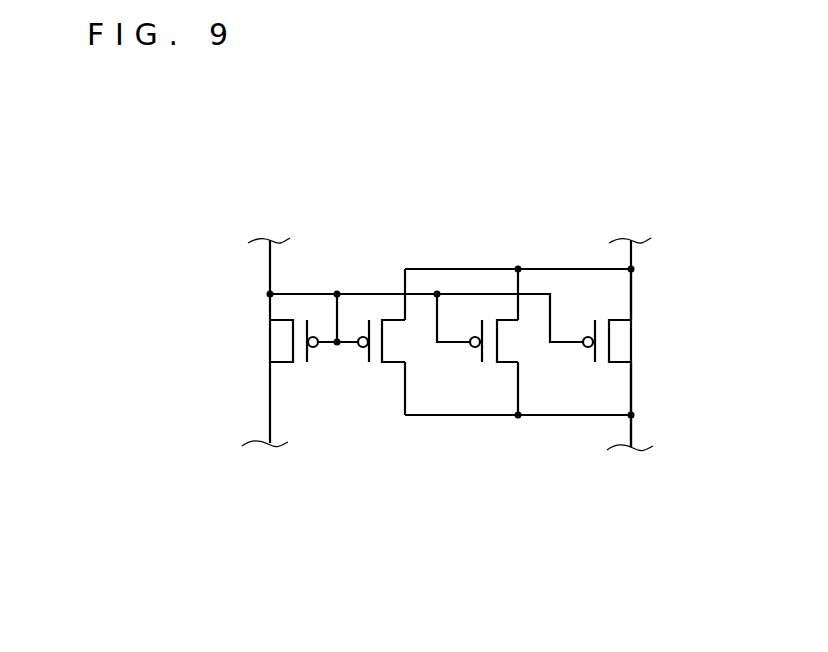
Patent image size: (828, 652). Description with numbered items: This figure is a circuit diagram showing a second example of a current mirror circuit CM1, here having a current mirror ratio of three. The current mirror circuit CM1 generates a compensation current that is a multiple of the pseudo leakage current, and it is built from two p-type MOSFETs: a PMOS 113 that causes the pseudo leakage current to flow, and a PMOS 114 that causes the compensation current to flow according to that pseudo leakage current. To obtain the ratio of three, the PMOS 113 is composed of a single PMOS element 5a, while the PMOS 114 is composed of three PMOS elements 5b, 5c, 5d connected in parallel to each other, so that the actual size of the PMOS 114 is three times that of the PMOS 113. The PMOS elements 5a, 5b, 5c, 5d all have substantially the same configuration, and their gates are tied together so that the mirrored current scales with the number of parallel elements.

The current mirror circuit CM1 is at (230, 210).
The PMOS element 5a is at (300, 365).
The PMOS element 5b is at (378, 365).
The PMOS element 5c is at (489, 365).
The PMOS element 5d is at (603, 365).
The PMOS 113 is at (345, 505).
The PMOS 114 is at (378, 505).